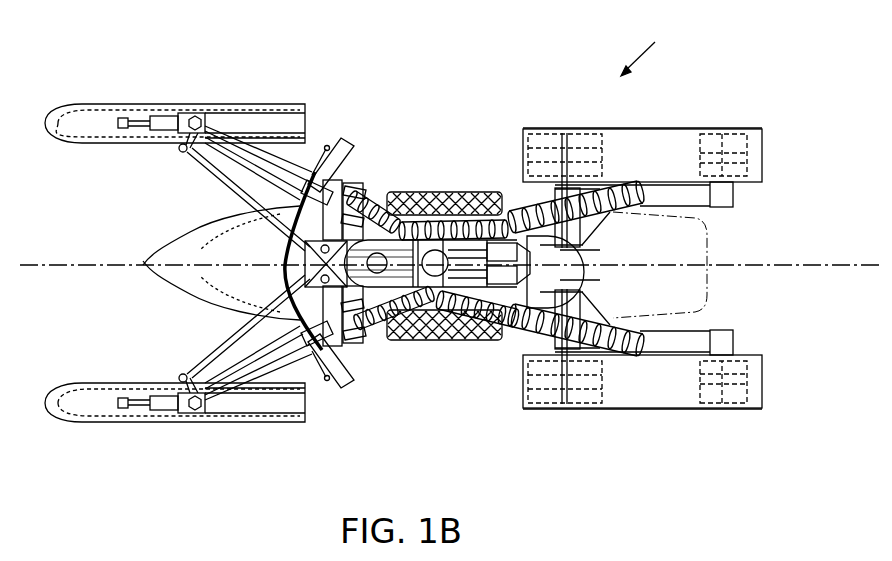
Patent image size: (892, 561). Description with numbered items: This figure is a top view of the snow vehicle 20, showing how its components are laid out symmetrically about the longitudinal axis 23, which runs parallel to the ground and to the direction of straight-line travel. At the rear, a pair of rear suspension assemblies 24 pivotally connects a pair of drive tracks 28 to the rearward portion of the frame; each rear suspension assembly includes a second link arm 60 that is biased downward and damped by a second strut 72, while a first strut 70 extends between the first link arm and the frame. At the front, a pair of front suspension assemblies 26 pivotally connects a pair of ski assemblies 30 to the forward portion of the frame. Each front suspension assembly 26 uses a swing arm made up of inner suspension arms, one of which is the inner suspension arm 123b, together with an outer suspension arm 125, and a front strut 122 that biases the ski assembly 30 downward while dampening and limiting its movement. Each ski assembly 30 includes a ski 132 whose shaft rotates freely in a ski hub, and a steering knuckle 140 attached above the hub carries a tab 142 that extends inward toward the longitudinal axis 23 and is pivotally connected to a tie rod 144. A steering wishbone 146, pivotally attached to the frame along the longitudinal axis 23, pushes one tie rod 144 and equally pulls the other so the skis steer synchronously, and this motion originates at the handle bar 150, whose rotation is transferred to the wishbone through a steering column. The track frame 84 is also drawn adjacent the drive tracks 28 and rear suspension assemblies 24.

The snow vehicle 20 is at (650, 50).
The longitudinal axis 23 is at (94, 268).
The rear suspension assembly 24 is at (740, 214).
The front suspension assembly 26 is at (72, 200).
The drive track 28 is at (667, 131).
The ski assembly 30 is at (162, 175).
The second link arm 60 is at (670, 200).
The first strut 70 is at (512, 194).
The second strut 72 is at (588, 200).
The track frame 84 is at (752, 130).
The front strut 122 is at (388, 200).
The inner suspension arm 123b is at (241, 160).
The outer suspension arm 125 is at (292, 165).
The ski 132 is at (185, 428).
The steering knuckle 140 is at (200, 113).
The tab 142 is at (180, 136).
The tie rod 144 is at (212, 178).
The steering wishbone 146 is at (368, 340).
The handle bar 150 is at (350, 148).